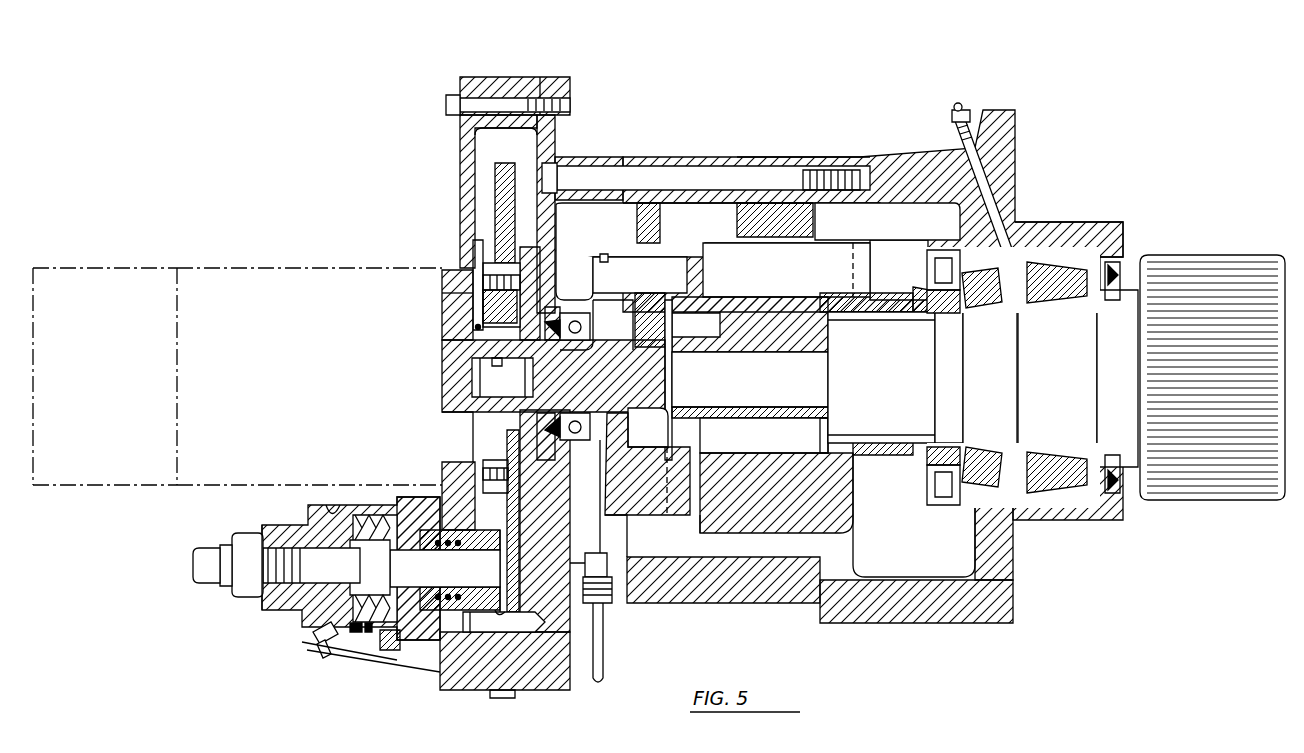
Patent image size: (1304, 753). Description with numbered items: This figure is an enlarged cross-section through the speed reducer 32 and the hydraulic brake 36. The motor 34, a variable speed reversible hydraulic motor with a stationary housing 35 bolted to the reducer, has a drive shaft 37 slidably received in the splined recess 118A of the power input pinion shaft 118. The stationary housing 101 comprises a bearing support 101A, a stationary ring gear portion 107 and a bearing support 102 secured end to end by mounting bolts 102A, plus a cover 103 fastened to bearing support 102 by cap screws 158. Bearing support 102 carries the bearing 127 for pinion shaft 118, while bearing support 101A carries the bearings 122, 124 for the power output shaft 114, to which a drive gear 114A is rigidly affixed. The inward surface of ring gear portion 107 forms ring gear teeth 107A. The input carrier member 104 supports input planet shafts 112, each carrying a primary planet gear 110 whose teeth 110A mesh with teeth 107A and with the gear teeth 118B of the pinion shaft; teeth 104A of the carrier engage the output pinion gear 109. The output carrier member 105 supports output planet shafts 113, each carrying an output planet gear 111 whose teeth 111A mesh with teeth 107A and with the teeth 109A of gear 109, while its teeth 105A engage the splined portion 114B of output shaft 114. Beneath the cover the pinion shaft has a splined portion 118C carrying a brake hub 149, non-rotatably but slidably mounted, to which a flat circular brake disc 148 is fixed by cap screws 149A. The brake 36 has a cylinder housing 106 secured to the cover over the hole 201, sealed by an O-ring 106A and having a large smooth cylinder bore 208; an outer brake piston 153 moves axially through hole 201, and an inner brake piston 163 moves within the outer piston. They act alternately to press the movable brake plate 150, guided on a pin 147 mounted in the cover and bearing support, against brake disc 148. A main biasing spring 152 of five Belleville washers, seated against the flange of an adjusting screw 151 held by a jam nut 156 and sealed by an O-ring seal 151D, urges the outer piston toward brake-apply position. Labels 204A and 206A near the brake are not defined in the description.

The speed reducer 32 is at (833, 78).
The motor 34 is at (100, 265).
The stationary housing 35 is at (208, 268).
The brake 36 is at (260, 614).
The rotatable drive shaft 37 is at (456, 367).
The stationary housing 101 is at (702, 148).
The bearing support 101A is at (1080, 223).
The bearing support 102 is at (592, 158).
The mounting bolts 102A is at (648, 166).
The cover 103 is at (488, 77).
The input carrier member 104 is at (658, 504).
The teeth 104A is at (704, 416).
The output carrier member 105 is at (853, 531).
The teeth 105A is at (893, 444).
The cylinder housing 106 is at (282, 525).
The O-ring 106A is at (440, 500).
The stationary ring gear portion 107 is at (767, 160).
The ring gear teeth 107A is at (700, 207).
The output pinion gear 109 is at (750, 412).
The teeth 109A is at (795, 414).
The primary planet gear 110 is at (640, 233).
The teeth 110A is at (637, 216).
The output planet gear 111 is at (800, 226).
The teeth 111A is at (778, 224).
The input planet shafts 112 is at (664, 281).
The output planet shafts 113 is at (816, 279).
The power output shaft 114 is at (1078, 382).
The drive gear 114A is at (1230, 258).
The splined portion 114B is at (920, 315).
The power input pinion shaft 118 is at (607, 387).
The splined recess 118A is at (497, 363).
The gear teeth 118B is at (672, 418).
The splined portion 118C is at (475, 290).
The bearing 122 is at (978, 472).
The bearing 124 is at (1062, 482).
The bearing 127 is at (580, 442).
The pin 147 is at (527, 628).
The brake disc 148 is at (497, 165).
The brake hub 149 is at (500, 265).
The cap screws 149A is at (462, 270).
The brake plate 150 is at (500, 597).
The adjusting screw 151 is at (207, 586).
The O-ring seal 151D is at (300, 588).
The main biasing spring 152 is at (373, 517).
The outer brake piston 153 is at (385, 653).
The jam nut 156 is at (238, 598).
The cap screws 158 is at (449, 97).
The inner brake piston 163 is at (403, 668).
The hole 201 is at (486, 612).
The cover plate 204A is at (414, 620).
The fitting 206A is at (350, 637).
The large smooth cylinder bore 208 is at (333, 518).